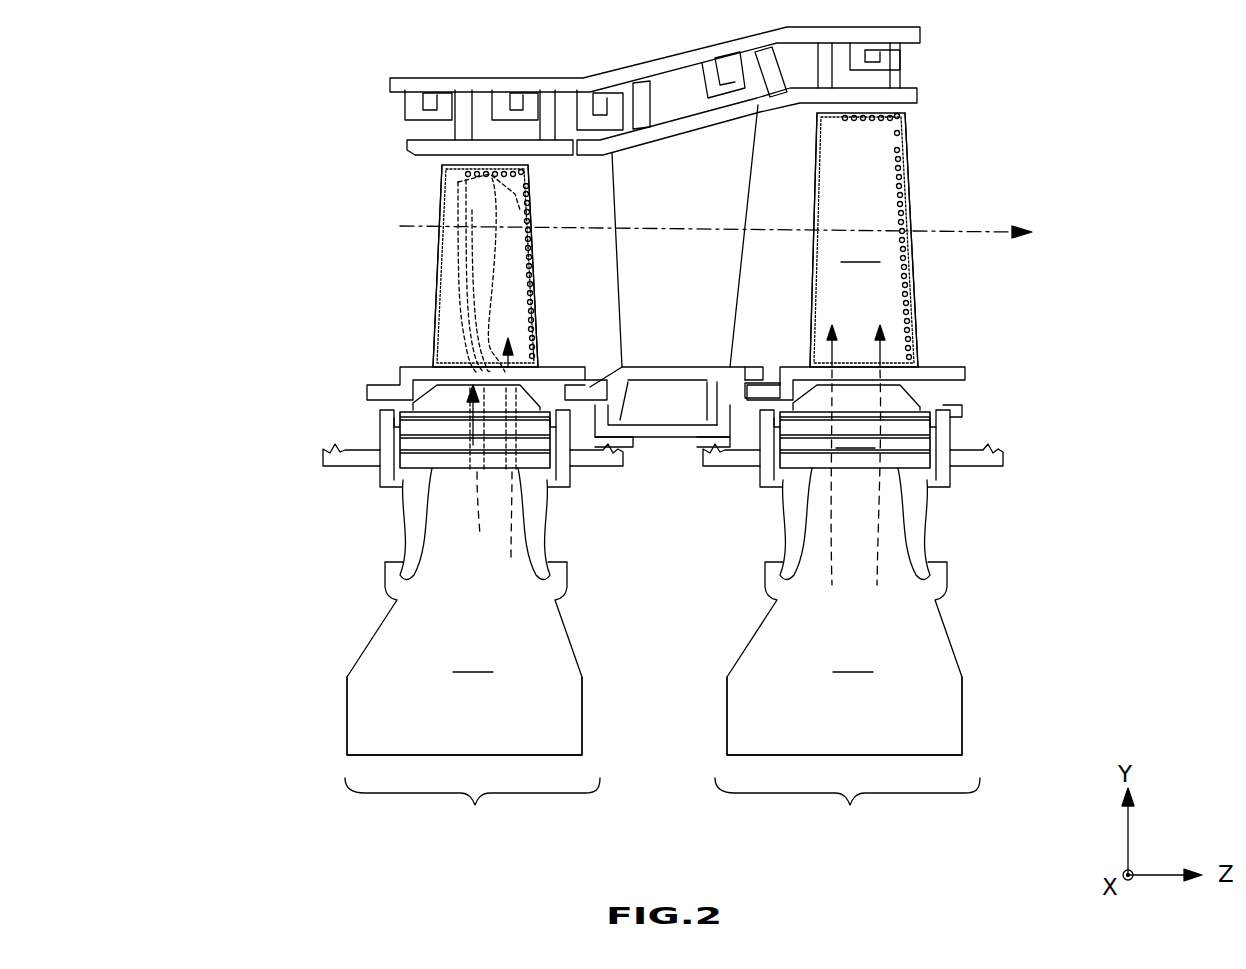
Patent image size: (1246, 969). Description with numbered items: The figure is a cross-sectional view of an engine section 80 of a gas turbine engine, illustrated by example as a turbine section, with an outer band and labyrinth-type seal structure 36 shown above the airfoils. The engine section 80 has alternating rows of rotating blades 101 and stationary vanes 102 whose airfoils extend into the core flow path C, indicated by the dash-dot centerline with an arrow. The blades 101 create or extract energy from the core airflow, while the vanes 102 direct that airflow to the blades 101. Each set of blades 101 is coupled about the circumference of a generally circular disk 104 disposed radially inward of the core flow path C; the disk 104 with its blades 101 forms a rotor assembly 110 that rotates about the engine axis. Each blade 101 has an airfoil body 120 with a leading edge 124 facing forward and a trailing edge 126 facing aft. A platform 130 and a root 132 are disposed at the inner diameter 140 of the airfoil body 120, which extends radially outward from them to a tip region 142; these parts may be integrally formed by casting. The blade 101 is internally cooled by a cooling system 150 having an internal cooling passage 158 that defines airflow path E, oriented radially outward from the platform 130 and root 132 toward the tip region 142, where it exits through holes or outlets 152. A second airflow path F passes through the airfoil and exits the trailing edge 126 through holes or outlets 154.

The engine section 80 is at (216, 84).
The turbine vane / outer band 36 is at (445, 85).
The blade 101 is at (372, 150).
The vane 102 is at (687, 153).
The disk 104 is at (654, 701).
The rotor assembly 110 is at (662, 811).
The airfoil body 120 is at (864, 240).
The leading edge 124 is at (436, 350).
The trailing edge 126 is at (536, 335).
The platform 130 is at (918, 380).
The root 132 is at (665, 440).
The inner diameter 140 is at (862, 340).
The tip region 142 is at (828, 120).
The cooling system 150 is at (274, 180).
The holes or outlets 152 is at (490, 176).
The holes or outlets 154 is at (527, 298).
The internal cooling passage 158 is at (452, 248).
The core flow path C is at (770, 225).
The airflow path E is at (478, 498).
The airflow path F is at (513, 550).